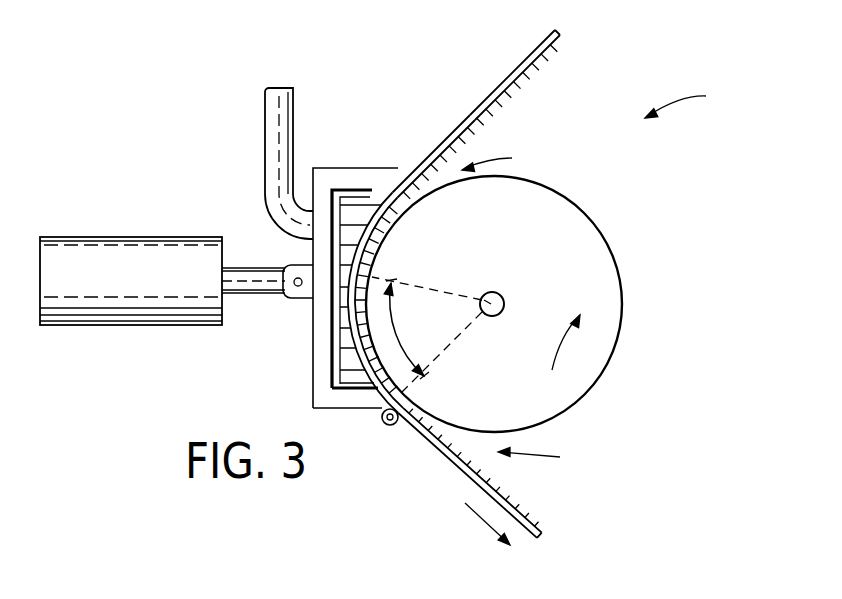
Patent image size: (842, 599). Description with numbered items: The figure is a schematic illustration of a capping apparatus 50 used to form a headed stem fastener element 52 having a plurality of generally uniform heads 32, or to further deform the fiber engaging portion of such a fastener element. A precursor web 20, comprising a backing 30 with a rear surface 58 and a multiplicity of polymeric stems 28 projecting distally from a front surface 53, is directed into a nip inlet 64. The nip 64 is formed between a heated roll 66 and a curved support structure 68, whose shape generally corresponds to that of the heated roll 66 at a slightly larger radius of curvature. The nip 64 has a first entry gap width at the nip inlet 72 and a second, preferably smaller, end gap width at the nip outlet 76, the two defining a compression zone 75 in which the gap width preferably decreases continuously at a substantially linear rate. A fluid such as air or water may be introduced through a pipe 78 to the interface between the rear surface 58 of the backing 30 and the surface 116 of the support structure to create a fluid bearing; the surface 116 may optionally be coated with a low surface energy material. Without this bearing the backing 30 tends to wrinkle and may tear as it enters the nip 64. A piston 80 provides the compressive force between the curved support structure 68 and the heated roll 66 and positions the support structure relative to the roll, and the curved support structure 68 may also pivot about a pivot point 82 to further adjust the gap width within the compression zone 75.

The precursor web 20 is at (485, 272).
The polymeric stems 28 is at (518, 86).
The backing 30 is at (500, 78).
The heads 32 is at (525, 520).
The capping apparatus 50 is at (694, 102).
The headed stem fastener element 52 is at (467, 478).
The front surface 53 is at (562, 36).
The rear surface 58 is at (462, 112).
The nip inlet 64 is at (505, 159).
The heated roll 66 is at (566, 269).
The curved support structure 68 is at (330, 342).
The nip inlet 72 is at (425, 180).
The compression zone 75 is at (396, 330).
The nip outlet 76 is at (548, 459).
The pipe 78 is at (275, 110).
The piston 80 is at (120, 237).
The pivot point 82 is at (382, 421).
The surface 116 is at (366, 212).